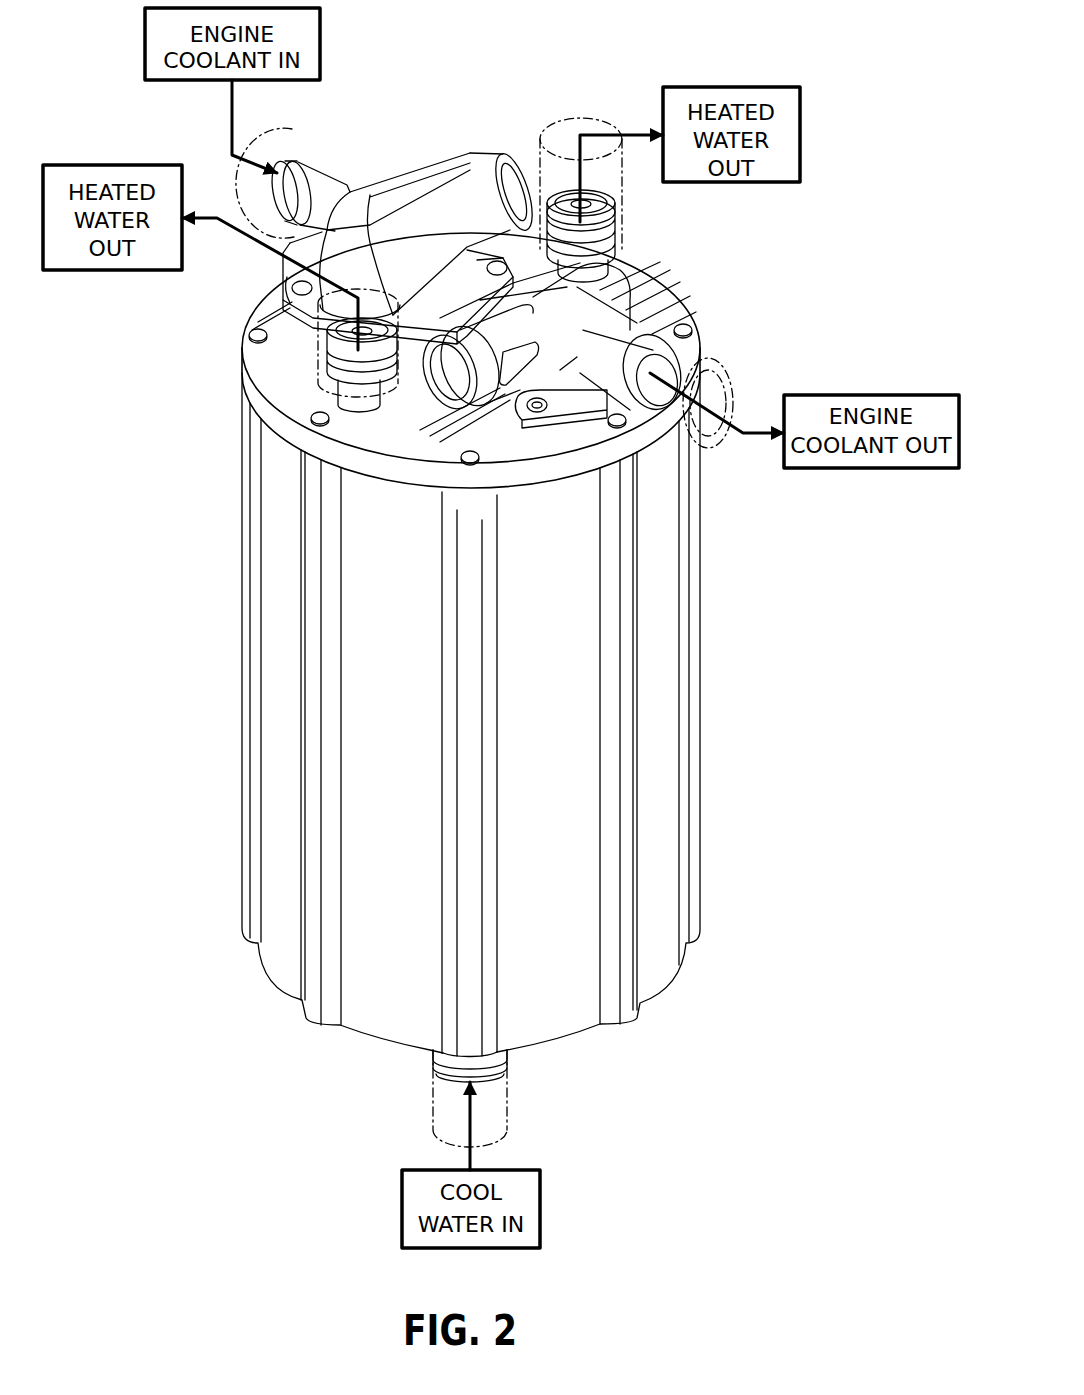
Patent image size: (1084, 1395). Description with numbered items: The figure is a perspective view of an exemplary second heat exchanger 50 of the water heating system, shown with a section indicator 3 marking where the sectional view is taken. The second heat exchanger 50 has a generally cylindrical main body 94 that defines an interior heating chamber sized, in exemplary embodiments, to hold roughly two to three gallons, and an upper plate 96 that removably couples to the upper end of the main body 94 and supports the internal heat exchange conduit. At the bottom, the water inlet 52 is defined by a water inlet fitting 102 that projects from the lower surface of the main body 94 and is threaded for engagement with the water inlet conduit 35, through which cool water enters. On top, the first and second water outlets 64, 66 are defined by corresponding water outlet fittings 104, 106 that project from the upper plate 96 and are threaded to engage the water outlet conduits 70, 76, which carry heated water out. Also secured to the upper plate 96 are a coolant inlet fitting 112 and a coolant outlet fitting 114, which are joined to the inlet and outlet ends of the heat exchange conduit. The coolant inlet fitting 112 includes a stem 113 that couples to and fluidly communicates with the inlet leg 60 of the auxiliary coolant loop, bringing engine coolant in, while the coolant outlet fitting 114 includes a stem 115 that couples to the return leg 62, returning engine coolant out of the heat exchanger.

The section line of FIG. 3 is at (217, 350).
The water inlet conduit 35 is at (433, 1138).
The second heat exchanger 50 is at (421, 72).
The water inlet 52 is at (450, 1072).
The inlet leg 60 is at (240, 150).
The return leg 62 is at (745, 366).
The first water outlet 64 is at (328, 355).
The second water outlet 66 is at (548, 205).
The water outlet conduit 70 is at (320, 385).
The water outlet conduit 76 is at (588, 120).
The main body 94 is at (244, 662).
The upper plate 96 is at (652, 272).
The water inlet fitting 102 is at (496, 1080).
The water outlet fitting 104 is at (320, 330).
The water outlet fitting 106 is at (614, 215).
The coolant inlet fitting 112 is at (400, 180).
The stem 113 is at (328, 190).
The coolant outlet fitting 114 is at (634, 307).
The stem 115 is at (652, 330).